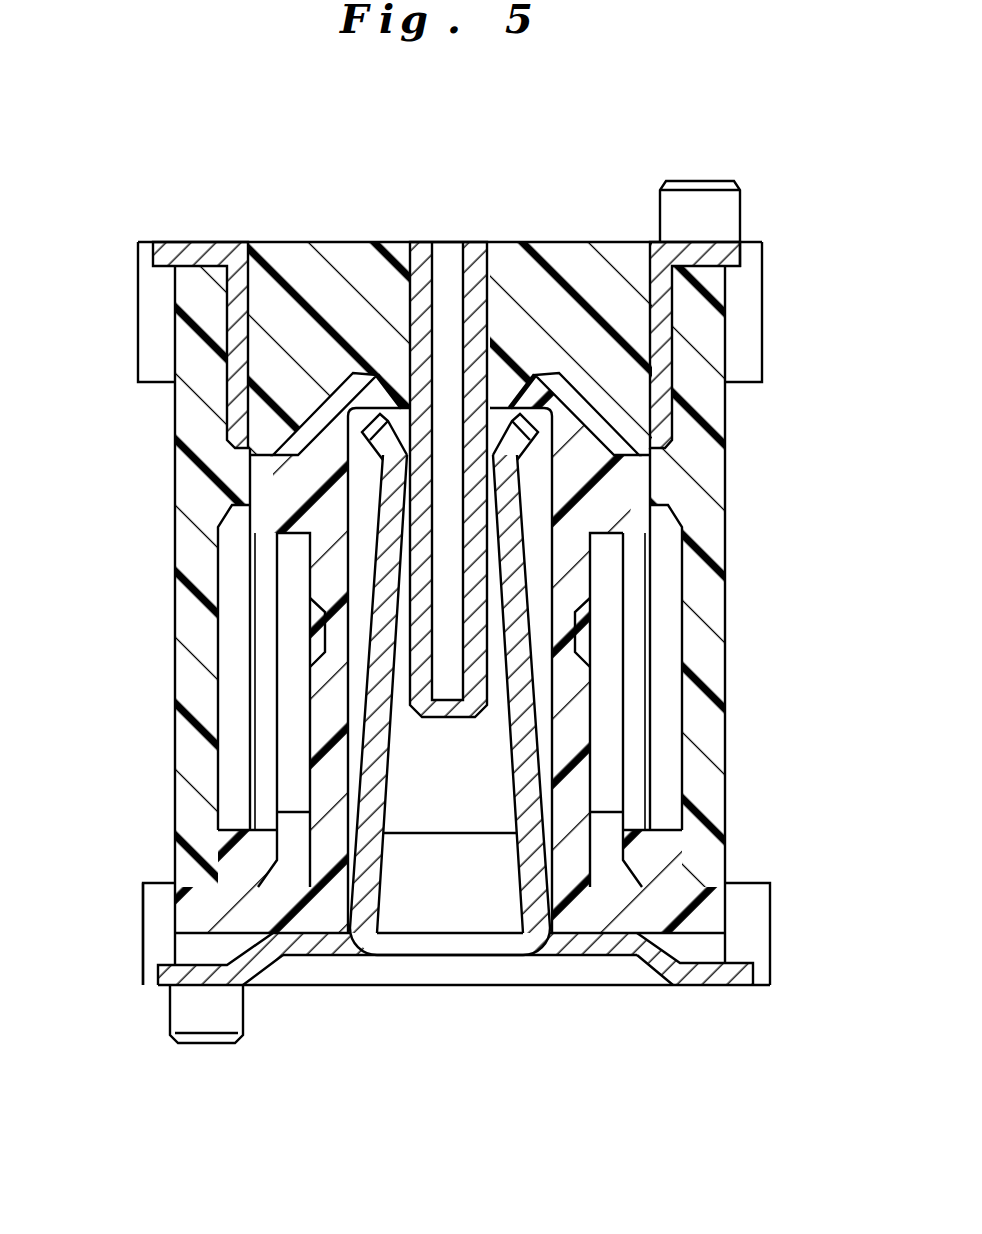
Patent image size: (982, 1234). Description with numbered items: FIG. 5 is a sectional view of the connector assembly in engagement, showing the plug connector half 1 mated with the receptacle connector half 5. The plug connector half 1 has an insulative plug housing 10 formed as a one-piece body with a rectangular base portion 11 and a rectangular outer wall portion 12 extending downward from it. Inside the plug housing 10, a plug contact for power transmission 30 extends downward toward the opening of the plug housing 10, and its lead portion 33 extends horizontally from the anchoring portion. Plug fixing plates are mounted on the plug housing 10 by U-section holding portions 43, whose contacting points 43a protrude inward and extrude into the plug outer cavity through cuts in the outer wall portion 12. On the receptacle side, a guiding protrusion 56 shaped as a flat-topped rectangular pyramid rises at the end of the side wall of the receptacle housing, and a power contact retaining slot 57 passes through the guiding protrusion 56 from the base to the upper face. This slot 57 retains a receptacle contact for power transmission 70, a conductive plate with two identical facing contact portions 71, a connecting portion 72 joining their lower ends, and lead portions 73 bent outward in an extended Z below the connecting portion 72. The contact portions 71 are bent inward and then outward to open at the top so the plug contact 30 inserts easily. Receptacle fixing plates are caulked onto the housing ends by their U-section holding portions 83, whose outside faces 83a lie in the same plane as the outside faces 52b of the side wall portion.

The plug connector half 1 is at (763, 183).
The receptacle connector half 5 is at (122, 866).
The plug housing 10 is at (733, 478).
The base portion 11 is at (337, 242).
The outer wall portion 12 is at (727, 428).
The plug contact for power transmission 30 is at (472, 232).
The lead portion 33 is at (190, 242).
The holding portion 43 is at (233, 637).
The contacting point 43a is at (263, 765).
The outside face of side wall portion 52b is at (273, 528).
The guiding protrusion 56 is at (598, 412).
The power contact retaining slot 57 is at (452, 797).
The receptacle contact for power transmission 70 is at (510, 772).
The contact portion 71 is at (350, 460).
The connecting portion 72 is at (493, 920).
The lead portion 73 is at (183, 987).
The holding portion 83 is at (285, 662).
The outside face of holding portion 83a is at (300, 567).